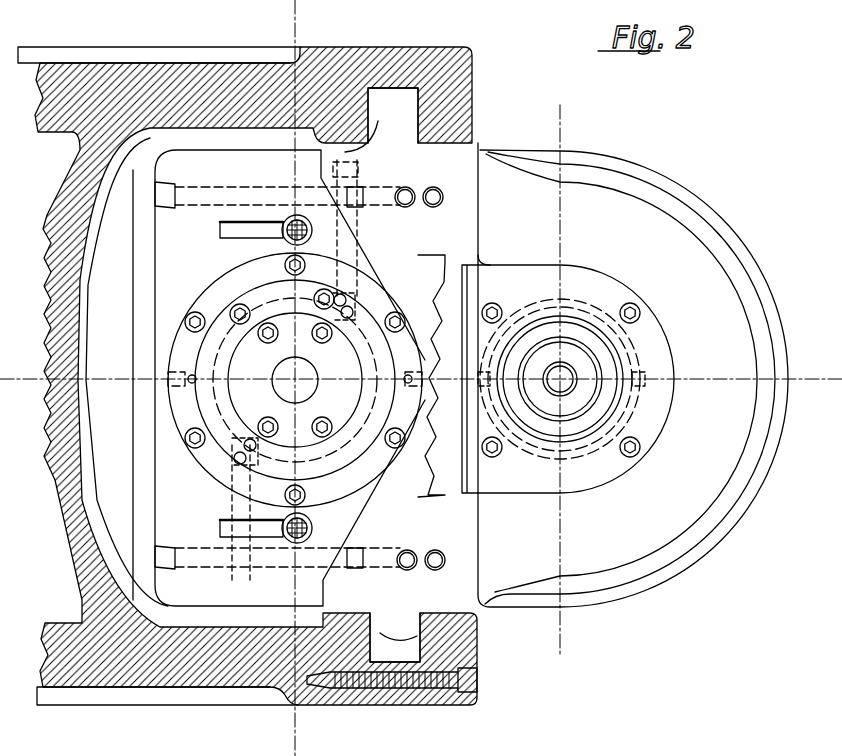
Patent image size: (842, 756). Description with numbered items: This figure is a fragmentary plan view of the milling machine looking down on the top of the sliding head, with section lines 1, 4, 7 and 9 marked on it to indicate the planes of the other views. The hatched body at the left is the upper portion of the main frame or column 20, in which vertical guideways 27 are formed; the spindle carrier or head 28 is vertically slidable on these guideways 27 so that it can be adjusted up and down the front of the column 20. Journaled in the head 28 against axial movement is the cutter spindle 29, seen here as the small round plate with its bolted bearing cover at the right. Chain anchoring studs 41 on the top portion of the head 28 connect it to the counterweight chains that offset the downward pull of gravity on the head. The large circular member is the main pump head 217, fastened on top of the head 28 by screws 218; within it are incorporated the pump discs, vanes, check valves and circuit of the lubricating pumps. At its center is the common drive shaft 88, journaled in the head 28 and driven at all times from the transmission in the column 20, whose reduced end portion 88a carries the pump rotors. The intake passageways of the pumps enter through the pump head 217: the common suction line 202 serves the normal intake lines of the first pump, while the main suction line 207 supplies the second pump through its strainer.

The column 20 is at (350, 62).
The guideways 27 is at (394, 375).
The spindle carrier or head 28 is at (568, 355).
The cutter spindle 29 is at (590, 366).
The chain anchoring studs 41 is at (311, 233).
The drive shaft 88 is at (288, 366).
The reduced end portion 88a is at (282, 389).
The common suction line 202 is at (360, 225).
The main suction line 207 is at (428, 588).
The main pump head 217 is at (258, 297).
The screws 218 is at (232, 312).
The section line 1- 1 is at (15, 408).
The section line 4- 4 is at (335, 18).
The section line 7- 7 is at (592, 126).
The section line 9- 9 is at (165, 408).